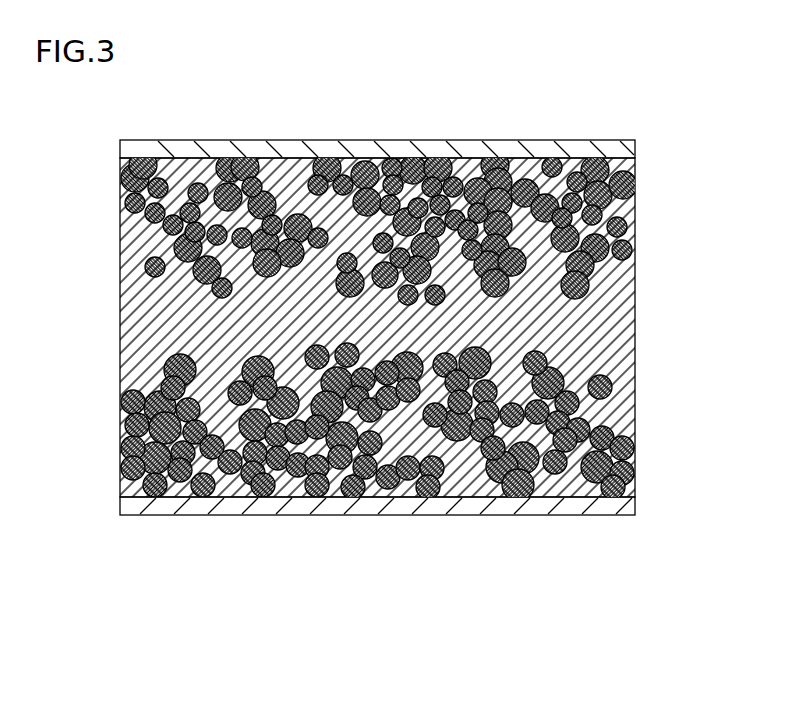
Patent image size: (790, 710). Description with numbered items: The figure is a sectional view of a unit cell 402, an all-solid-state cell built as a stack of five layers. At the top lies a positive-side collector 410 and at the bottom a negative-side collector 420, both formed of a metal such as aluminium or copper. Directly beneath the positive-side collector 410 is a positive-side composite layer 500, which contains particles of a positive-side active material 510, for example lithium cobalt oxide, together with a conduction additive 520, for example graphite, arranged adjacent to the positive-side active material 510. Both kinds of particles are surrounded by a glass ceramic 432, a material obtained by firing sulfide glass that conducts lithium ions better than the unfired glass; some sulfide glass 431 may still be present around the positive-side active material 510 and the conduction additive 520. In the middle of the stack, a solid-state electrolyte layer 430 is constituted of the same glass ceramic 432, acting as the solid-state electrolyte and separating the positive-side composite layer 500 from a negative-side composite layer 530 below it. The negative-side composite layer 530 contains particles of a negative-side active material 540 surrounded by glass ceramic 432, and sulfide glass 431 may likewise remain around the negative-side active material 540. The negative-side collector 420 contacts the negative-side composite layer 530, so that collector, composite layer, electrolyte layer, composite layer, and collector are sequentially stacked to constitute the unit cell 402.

The unit cell 402 is at (120, 581).
The positive-side collector 410 is at (623, 152).
The negative-side collector 420 is at (625, 507).
The solid-state electrolyte layer 430 is at (413, 327).
The sulfide glass 431 is at (413, 327).
The glass ceramic 432 is at (180, 168).
The positive-side composite layer 500 is at (375, 198).
The positive-side active material 510 is at (122, 180).
The conduction additive 520 is at (122, 200).
The negative-side composite layer 530 is at (648, 362).
The negative-side active material 540 is at (157, 488).